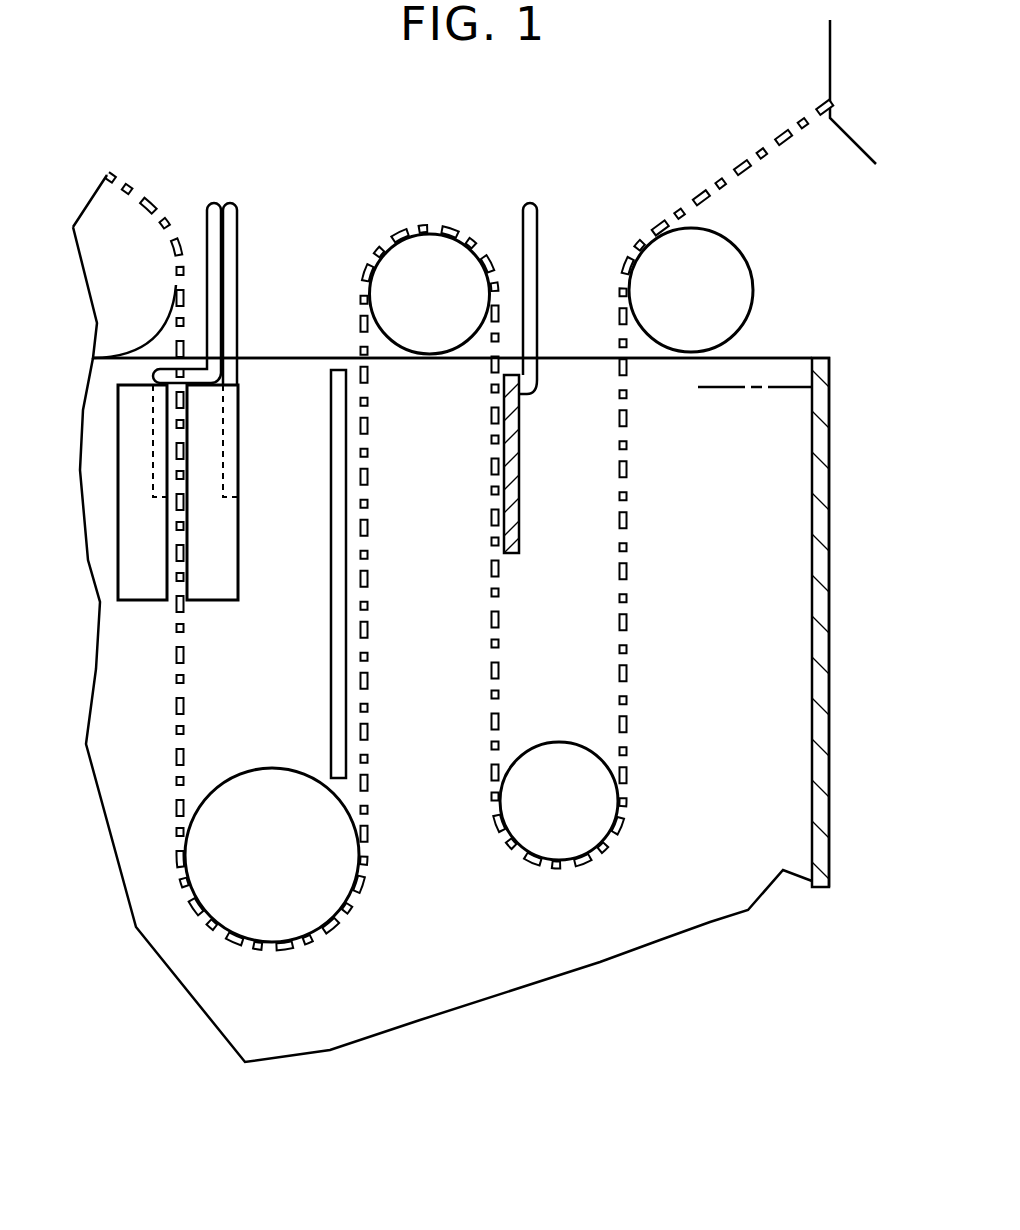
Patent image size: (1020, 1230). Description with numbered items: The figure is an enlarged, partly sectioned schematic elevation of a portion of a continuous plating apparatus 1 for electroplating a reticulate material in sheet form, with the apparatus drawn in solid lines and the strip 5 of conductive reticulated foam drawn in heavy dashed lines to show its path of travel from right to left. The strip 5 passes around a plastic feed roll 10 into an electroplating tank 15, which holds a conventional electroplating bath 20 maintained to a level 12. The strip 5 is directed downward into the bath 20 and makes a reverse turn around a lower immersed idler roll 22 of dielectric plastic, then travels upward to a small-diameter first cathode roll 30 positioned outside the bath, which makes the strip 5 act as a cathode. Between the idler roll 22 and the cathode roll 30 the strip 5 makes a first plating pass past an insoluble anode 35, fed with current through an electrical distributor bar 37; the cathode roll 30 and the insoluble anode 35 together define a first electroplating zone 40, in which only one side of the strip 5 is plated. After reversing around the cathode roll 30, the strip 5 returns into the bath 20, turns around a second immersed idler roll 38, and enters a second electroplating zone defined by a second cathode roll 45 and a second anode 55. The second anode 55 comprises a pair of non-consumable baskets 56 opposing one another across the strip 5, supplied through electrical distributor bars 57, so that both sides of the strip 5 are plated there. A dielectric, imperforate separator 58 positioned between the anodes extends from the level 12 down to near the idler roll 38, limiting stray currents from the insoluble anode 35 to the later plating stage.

The continuous plating apparatus 1 is at (864, 422).
The strip 5 is at (741, 160).
The feed roll 10 is at (735, 283).
The level 12 is at (792, 388).
The electroplating tank 15 is at (812, 698).
The electroplating bath 20 is at (795, 535).
The idler roll 22 is at (562, 760).
The cathode roll 30 is at (416, 262).
The insoluble anode 35 is at (532, 416).
The electrical distributor bar 37 is at (537, 200).
The idler roll 38 is at (272, 790).
The first electroplating zone 40 is at (473, 416).
The second cathode roll 45 is at (103, 210).
The second anode 55 is at (118, 489).
The baskets 56 is at (142, 590).
The electrical distributor bars 57 is at (212, 203).
The separator 58 is at (330, 410).